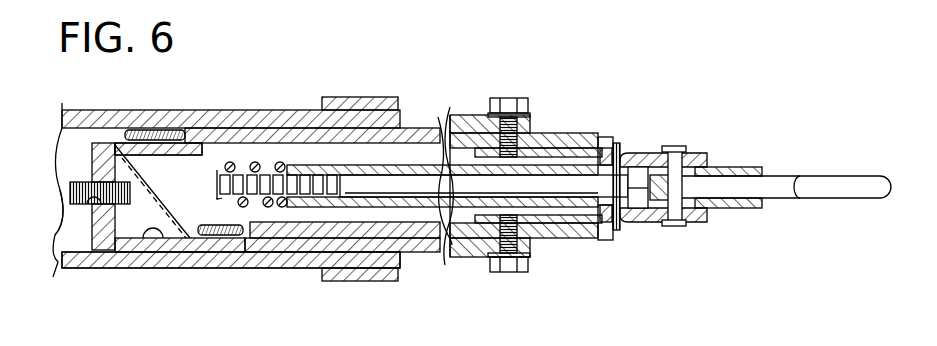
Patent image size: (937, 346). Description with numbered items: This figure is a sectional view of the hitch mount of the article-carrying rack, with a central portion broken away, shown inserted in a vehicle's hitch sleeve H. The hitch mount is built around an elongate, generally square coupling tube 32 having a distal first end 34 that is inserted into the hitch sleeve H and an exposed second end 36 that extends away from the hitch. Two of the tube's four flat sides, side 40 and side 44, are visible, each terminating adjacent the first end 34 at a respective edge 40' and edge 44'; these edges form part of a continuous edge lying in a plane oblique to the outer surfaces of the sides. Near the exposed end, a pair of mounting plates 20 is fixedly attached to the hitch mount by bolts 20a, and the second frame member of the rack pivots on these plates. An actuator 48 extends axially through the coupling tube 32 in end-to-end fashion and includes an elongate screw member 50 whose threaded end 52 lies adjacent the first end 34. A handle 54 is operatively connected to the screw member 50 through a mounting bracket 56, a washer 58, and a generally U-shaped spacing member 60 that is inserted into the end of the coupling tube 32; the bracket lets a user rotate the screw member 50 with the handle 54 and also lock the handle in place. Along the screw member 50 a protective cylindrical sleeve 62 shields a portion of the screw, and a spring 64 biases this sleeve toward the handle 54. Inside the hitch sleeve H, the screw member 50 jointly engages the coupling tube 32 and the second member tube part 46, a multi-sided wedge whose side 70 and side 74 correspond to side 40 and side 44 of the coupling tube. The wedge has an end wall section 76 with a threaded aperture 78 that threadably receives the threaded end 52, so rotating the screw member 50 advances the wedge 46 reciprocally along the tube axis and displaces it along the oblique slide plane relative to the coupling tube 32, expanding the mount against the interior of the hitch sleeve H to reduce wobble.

The hitch sleeve H is at (95, 108).
The mounting plates 20 is at (472, 115).
The bolts 20a is at (523, 83).
The coupling tube 32 is at (580, 130).
The first end 34 is at (270, 243).
The second end 36 is at (543, 130).
The side 40 is at (312, 106).
The edge 40' is at (155, 109).
The side 44 is at (345, 263).
The edge 44' is at (220, 265).
The second member tube part 46 is at (174, 255).
The actuator 48 is at (680, 132).
The screw member 50 is at (414, 183).
The threaded end 52 is at (58, 232).
The handle 54 is at (830, 175).
The mounting bracket 56 is at (700, 153).
The washer 58 is at (620, 227).
The spacing member 60 is at (614, 233).
The protective cylindrical sleeve 62 is at (380, 163).
The spring 64 is at (262, 165).
The side 70 is at (172, 157).
The side 74 is at (138, 252).
The end wall section 76 is at (90, 166).
The aperture 78 is at (86, 206).